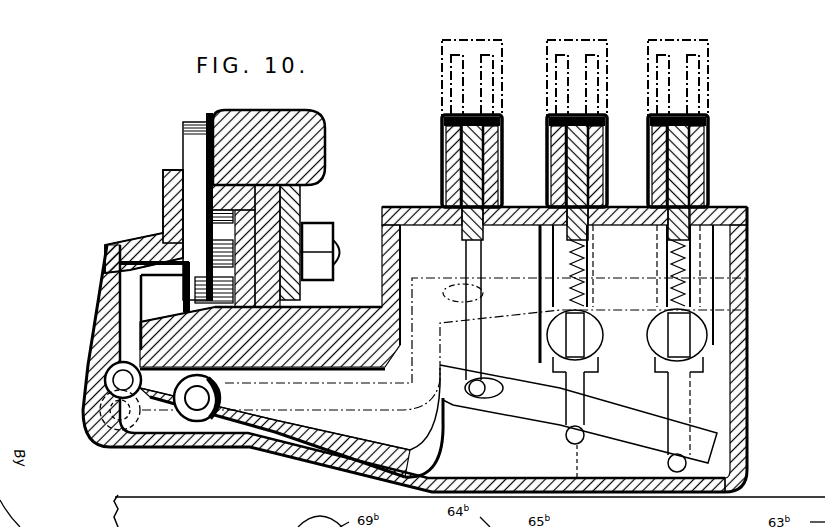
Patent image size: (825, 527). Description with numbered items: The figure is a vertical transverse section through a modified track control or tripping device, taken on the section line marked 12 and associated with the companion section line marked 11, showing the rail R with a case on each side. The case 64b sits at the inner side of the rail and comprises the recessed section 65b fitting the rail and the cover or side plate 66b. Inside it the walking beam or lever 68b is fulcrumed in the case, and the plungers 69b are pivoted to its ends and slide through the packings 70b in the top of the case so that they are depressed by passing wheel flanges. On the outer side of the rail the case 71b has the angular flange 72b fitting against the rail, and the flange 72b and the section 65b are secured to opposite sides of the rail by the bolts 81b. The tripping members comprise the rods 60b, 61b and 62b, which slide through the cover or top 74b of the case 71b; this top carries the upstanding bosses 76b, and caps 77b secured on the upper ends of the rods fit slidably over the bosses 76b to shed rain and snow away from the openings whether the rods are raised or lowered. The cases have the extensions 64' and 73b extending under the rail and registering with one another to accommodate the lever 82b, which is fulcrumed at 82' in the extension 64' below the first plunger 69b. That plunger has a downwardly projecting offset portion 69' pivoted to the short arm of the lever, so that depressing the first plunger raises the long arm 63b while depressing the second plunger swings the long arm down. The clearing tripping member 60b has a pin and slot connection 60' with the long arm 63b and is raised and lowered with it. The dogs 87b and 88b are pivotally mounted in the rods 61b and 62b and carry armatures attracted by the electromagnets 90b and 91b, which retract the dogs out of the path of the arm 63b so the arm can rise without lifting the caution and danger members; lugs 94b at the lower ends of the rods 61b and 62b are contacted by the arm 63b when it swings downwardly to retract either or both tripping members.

The rail R is at (299, 122).
The section line 11- 11 is at (570, 474).
The section line 12- 12 is at (188, 122).
The clearing tripping member 60b is at (468, 182).
The pin and slot connection 60' is at (483, 347).
The caution tripping member 61b is at (705, 185).
The danger tripping member 62b is at (562, 177).
The long arm 63b is at (597, 415).
The case 64b is at (148, 201).
The extension 64' is at (275, 432).
The recessed section 65b is at (300, 190).
The cover or side plate 66b is at (162, 228).
The walking beam or lever 68b is at (193, 282).
The plungers 69b is at (193, 158).
The downwardly projecting offset portion 69' is at (375, 368).
The packings 70b is at (165, 173).
The case 71b is at (754, 271).
The angular flange 72b is at (303, 292).
The extension 73b is at (318, 432).
The cover or top 74b is at (740, 205).
The upstanding bosses 76b is at (450, 155).
The caps 77b is at (443, 130).
The bolts 81b is at (332, 252).
The lever 82b is at (260, 422).
The fulcrum 82' is at (188, 431).
The dog 87b is at (677, 347).
The dog 88b is at (573, 333).
The electromagnet 90b is at (710, 325).
The electromagnet 91b is at (603, 312).
The lugs 94b is at (665, 462).